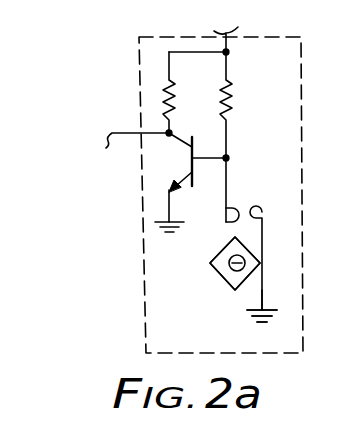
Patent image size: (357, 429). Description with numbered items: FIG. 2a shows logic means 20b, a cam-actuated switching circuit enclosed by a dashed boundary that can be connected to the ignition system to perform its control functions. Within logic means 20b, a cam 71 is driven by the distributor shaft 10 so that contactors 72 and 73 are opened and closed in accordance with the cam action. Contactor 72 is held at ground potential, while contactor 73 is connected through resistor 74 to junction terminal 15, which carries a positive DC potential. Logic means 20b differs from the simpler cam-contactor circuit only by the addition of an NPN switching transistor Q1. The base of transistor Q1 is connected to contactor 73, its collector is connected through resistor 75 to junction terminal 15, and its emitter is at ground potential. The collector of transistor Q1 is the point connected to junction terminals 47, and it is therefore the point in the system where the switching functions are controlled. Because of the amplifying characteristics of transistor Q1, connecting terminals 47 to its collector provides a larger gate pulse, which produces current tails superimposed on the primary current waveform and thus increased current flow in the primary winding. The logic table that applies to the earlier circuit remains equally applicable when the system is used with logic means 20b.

The junction terminal 15 is at (223, 28).
The junction terminals 47 is at (100, 140).
The resistor 75 is at (174, 93).
The resistor 74 is at (234, 94).
The NPN switching transistor Q1 is at (191, 181).
The contactor 73 is at (227, 182).
The cam 71 is at (224, 268).
The distributor shaft 10 is at (225, 271).
The contactor 72 is at (262, 298).
The logic means 20b is at (143, 268).